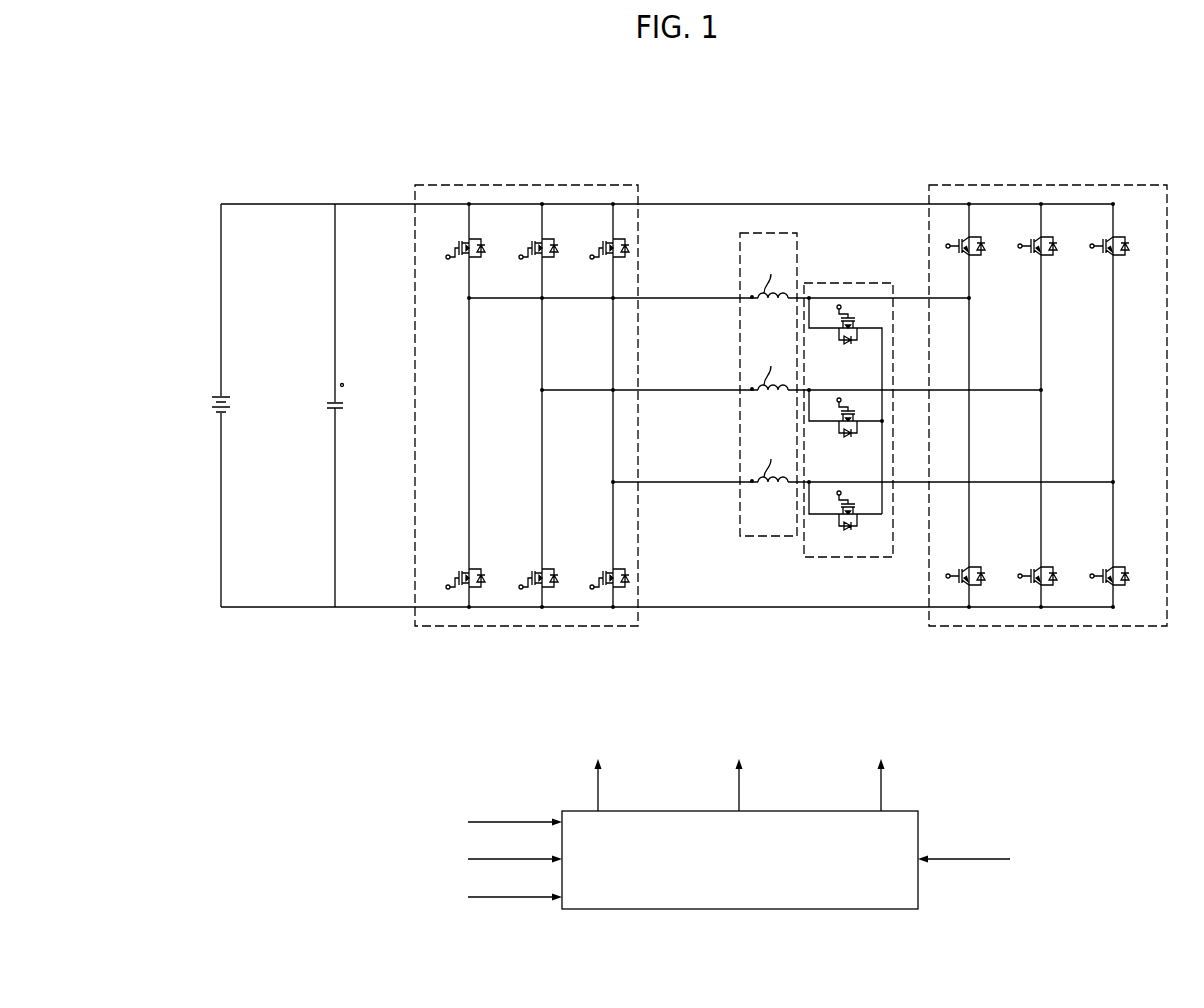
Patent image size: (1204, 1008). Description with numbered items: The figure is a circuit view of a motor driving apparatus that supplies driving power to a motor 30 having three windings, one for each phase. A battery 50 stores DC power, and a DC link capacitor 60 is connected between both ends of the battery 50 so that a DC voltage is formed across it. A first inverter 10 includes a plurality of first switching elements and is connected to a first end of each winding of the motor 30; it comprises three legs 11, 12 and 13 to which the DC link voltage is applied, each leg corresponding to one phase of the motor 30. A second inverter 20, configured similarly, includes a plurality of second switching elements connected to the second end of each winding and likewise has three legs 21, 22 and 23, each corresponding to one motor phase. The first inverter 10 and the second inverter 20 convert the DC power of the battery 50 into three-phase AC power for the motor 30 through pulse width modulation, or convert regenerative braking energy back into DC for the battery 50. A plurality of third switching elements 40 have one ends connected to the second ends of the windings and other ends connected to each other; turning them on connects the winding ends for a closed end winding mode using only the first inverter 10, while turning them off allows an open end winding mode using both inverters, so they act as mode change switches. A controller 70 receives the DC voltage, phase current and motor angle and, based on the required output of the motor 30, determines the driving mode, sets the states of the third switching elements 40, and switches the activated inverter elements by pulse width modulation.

The first inverter 10 is at (517, 185).
The leg of first inverter 11 is at (469, 631).
The leg of first inverter 12 is at (542, 631).
The leg of first inverter 13 is at (613, 631).
The second inverter 20 is at (1042, 185).
The leg of second inverter 21 is at (969, 631).
The leg of second inverter 22 is at (1041, 631).
The leg of second inverter 23 is at (1113, 631).
The motor 30 is at (773, 233).
The third switching elements 40 is at (840, 283).
The battery 50 is at (221, 396).
The DC link capacitor 60 is at (335, 403).
The controller 70 is at (918, 811).